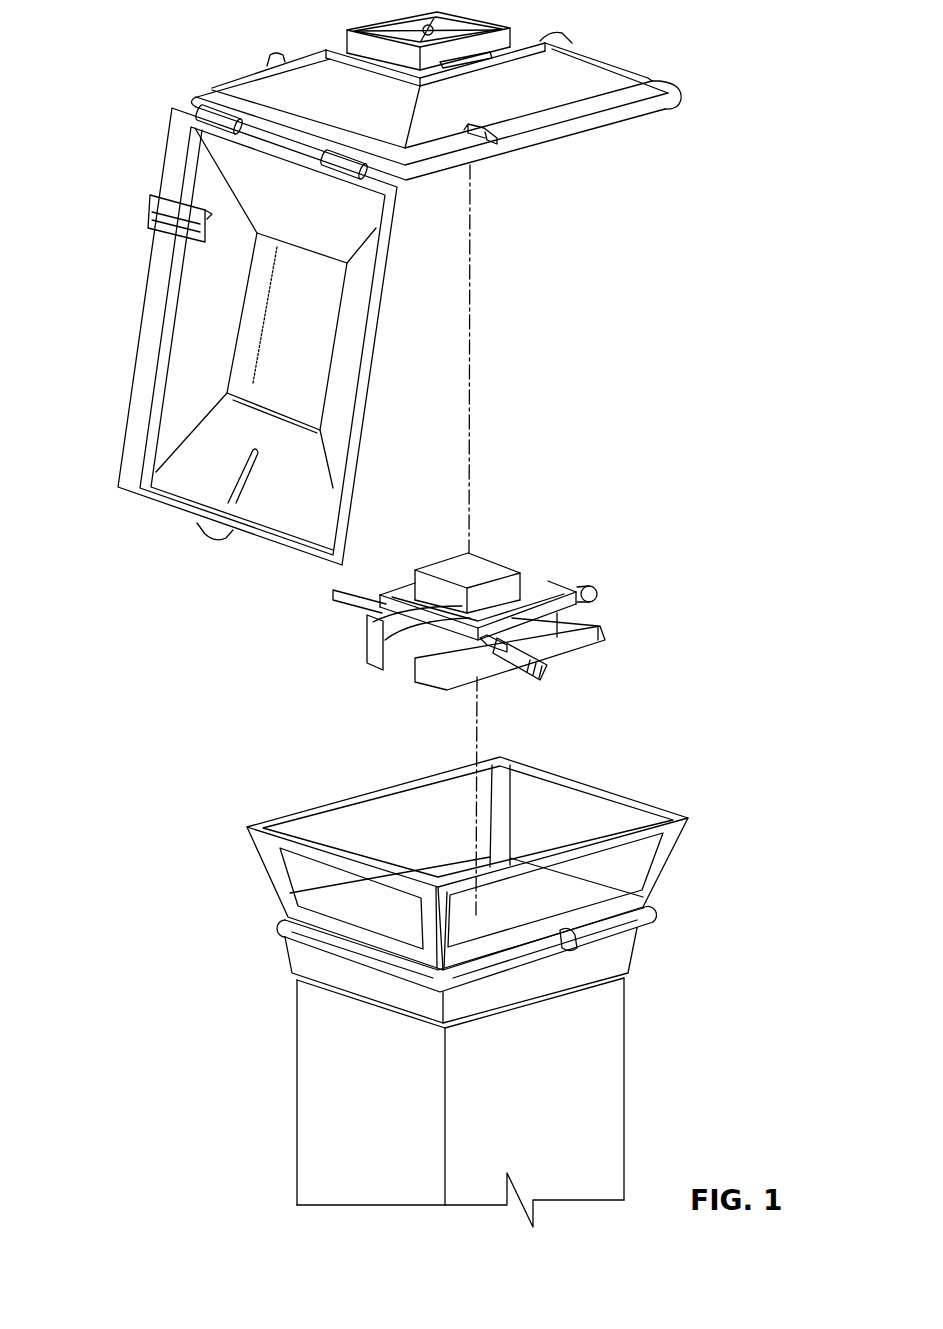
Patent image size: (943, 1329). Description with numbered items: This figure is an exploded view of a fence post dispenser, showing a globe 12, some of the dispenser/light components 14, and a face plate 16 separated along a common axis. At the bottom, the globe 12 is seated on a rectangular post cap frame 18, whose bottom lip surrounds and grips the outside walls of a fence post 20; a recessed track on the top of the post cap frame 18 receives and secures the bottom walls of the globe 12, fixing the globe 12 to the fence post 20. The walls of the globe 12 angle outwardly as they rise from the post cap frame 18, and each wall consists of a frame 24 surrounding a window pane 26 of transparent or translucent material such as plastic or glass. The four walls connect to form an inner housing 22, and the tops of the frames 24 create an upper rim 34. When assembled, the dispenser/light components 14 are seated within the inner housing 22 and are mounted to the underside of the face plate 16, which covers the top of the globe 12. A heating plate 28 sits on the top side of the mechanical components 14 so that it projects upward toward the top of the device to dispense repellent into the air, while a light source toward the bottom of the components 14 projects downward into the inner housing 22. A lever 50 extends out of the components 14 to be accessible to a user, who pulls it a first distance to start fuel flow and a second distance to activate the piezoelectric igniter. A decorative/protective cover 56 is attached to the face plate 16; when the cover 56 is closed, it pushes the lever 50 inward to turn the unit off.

The globe 12 is at (715, 841).
The dispenser/light components 14 is at (619, 579).
The face plate 16 is at (674, 72).
The post cap frame 18 is at (615, 957).
The fence post 20 is at (607, 1063).
The inner housing 22 is at (555, 812).
The frame 24 is at (252, 836).
The window pane 26 is at (315, 877).
The heating plate 28 is at (493, 563).
The upper rim 34 is at (345, 802).
The lever 50 is at (547, 677).
The decorative/protective cover 56 is at (124, 461).